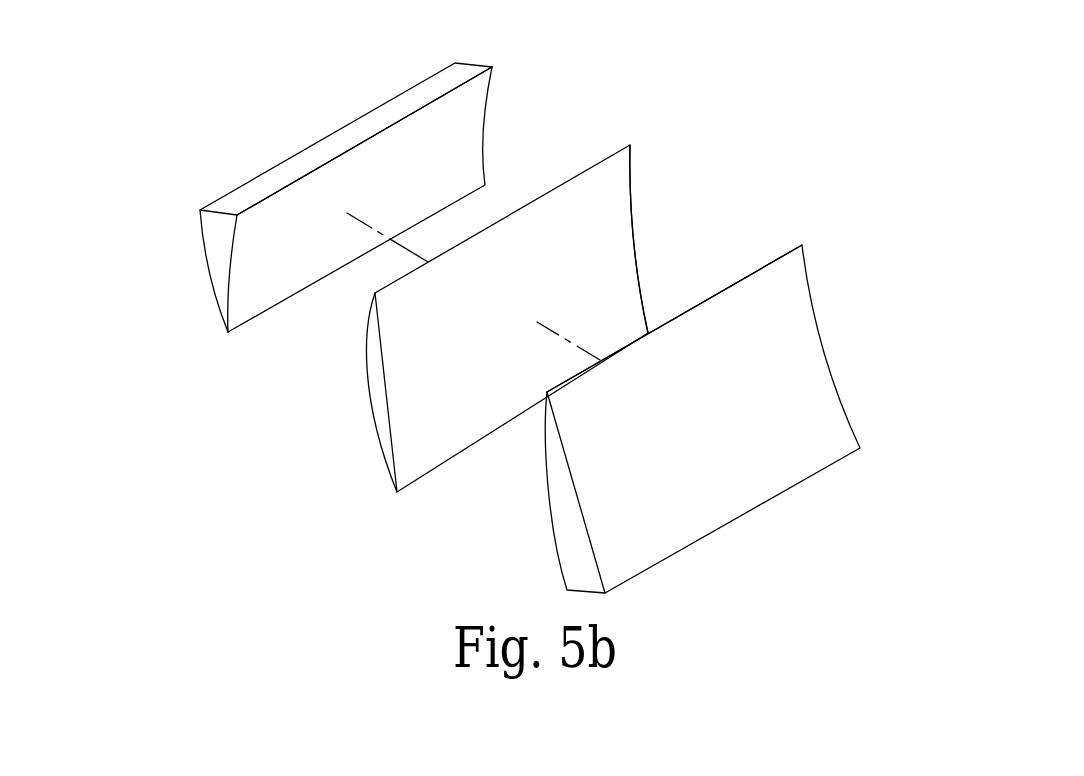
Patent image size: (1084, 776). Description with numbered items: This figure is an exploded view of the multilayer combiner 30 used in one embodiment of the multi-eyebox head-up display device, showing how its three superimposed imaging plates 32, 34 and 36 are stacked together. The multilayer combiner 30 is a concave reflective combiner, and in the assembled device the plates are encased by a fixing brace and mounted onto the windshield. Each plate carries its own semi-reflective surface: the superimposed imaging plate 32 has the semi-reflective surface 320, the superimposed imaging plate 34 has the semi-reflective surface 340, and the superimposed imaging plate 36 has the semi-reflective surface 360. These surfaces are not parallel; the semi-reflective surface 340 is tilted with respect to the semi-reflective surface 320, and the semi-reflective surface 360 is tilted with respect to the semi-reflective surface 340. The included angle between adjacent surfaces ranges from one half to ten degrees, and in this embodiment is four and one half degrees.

The multilayer combiner 30 is at (748, 147).
The superimposed imaging plate 32 is at (583, 575).
The semi-reflective surface 320 is at (777, 343).
The superimposed imaging plate 34 is at (375, 412).
The semi-reflective surface 340 is at (627, 278).
The superimposed imaging plate 36 is at (213, 243).
The semi-reflective surface 360 is at (445, 135).